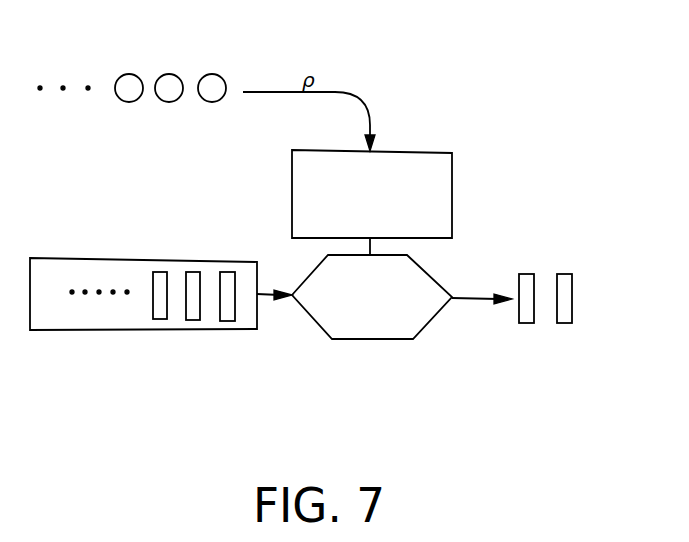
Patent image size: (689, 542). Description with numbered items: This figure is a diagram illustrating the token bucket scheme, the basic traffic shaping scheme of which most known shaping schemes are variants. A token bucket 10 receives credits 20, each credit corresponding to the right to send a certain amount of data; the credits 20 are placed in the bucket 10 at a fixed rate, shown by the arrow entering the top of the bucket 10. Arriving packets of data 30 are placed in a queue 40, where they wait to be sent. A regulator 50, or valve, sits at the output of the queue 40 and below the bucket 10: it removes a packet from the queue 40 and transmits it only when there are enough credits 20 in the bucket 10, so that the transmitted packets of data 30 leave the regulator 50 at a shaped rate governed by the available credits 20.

The token bucket 10 is at (452, 158).
The credits 20 is at (128, 75).
The packets of data 30 is at (160, 320).
The queue 40 is at (248, 331).
The regulator 50 is at (422, 328).